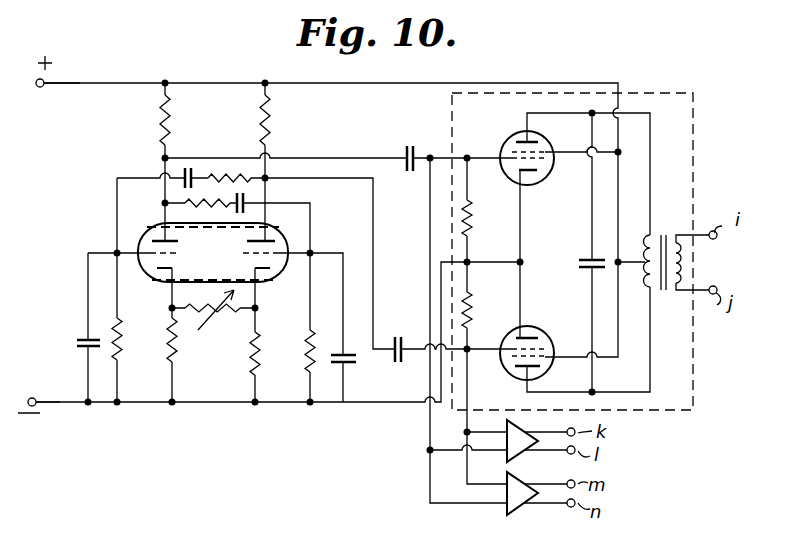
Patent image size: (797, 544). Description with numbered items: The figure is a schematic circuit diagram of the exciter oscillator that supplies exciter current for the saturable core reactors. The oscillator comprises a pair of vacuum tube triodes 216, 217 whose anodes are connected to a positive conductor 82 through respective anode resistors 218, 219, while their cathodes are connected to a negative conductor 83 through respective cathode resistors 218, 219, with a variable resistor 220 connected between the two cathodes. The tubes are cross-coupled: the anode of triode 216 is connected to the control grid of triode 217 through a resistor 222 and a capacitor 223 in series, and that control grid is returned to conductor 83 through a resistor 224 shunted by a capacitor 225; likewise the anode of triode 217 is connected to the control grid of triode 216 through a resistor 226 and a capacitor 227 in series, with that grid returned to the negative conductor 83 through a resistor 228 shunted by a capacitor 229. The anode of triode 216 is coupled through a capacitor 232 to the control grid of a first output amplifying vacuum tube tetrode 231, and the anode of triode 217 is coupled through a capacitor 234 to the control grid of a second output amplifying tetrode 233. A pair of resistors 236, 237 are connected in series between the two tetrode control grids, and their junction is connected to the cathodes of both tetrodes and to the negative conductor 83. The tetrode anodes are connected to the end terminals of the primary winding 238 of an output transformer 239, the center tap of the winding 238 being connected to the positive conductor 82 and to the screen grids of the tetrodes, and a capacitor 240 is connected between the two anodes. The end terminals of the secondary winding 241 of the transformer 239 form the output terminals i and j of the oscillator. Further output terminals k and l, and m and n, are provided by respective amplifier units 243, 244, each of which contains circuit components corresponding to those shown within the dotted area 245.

The positive conductor 82 is at (118, 81).
The negative conductor 83 is at (62, 404).
The vacuum tube triode 216 is at (162, 283).
The vacuum tube triode 217 is at (292, 244).
The anode resistor and cathode resistor 218 is at (163, 120).
The anode resistor and cathode resistor 219 is at (268, 115).
The variable resistor 220 is at (216, 314).
The resistor 222 is at (190, 205).
The capacitor 223 is at (250, 205).
The resistor 224 is at (308, 362).
The capacitor 225 is at (350, 364).
The resistor 226 is at (217, 173).
The capacitor 227 is at (191, 166).
The resistor 228 is at (119, 332).
The capacitor 229 is at (79, 342).
The output amplifying vacuum tube tetrode 231 is at (511, 136).
The capacitor 232 is at (402, 148).
The output amplifying vacuum tube tetrode 233 is at (536, 328).
The capacitor 234 is at (396, 342).
The resistor 236 is at (471, 221).
The resistor 237 is at (471, 302).
The primary winding 238 is at (655, 290).
The output transformer 239 is at (673, 223).
The capacitor 240 is at (579, 257).
The secondary winding 241 is at (686, 265).
The amplifier unit 243 is at (517, 417).
The amplifier unit 244 is at (510, 516).
The dotted area 245 is at (668, 92).